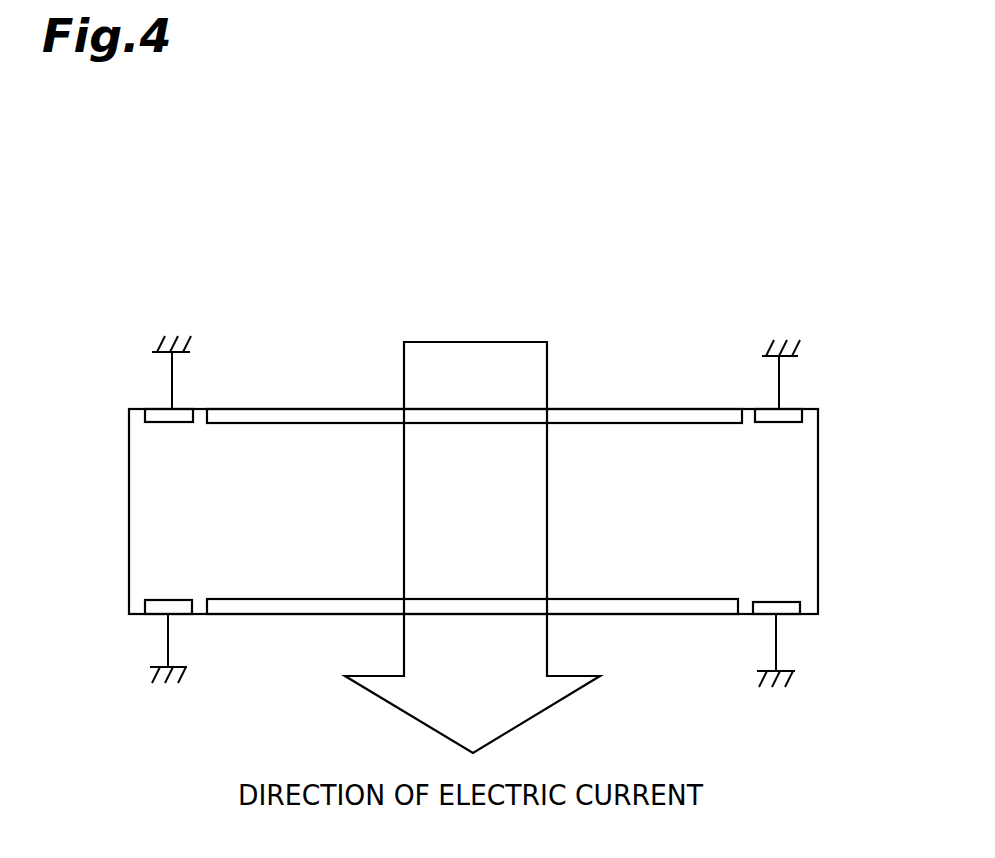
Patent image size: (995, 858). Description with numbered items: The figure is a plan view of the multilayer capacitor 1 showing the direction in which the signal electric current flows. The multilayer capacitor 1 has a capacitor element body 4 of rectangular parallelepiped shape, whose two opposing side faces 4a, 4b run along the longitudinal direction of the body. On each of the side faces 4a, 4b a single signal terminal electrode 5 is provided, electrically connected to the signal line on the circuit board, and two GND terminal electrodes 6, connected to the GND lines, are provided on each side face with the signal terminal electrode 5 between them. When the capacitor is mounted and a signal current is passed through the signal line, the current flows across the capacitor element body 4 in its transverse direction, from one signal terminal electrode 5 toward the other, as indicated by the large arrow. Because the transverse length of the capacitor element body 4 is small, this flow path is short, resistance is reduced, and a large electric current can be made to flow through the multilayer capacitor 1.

The multilayer capacitor 1 is at (696, 186).
The capacitor element body 4 is at (819, 519).
The side face 4a is at (203, 410).
The side face 4b is at (197, 614).
The signal terminal electrode 5 is at (588, 416).
The GND terminal electrode 6 is at (152, 413).